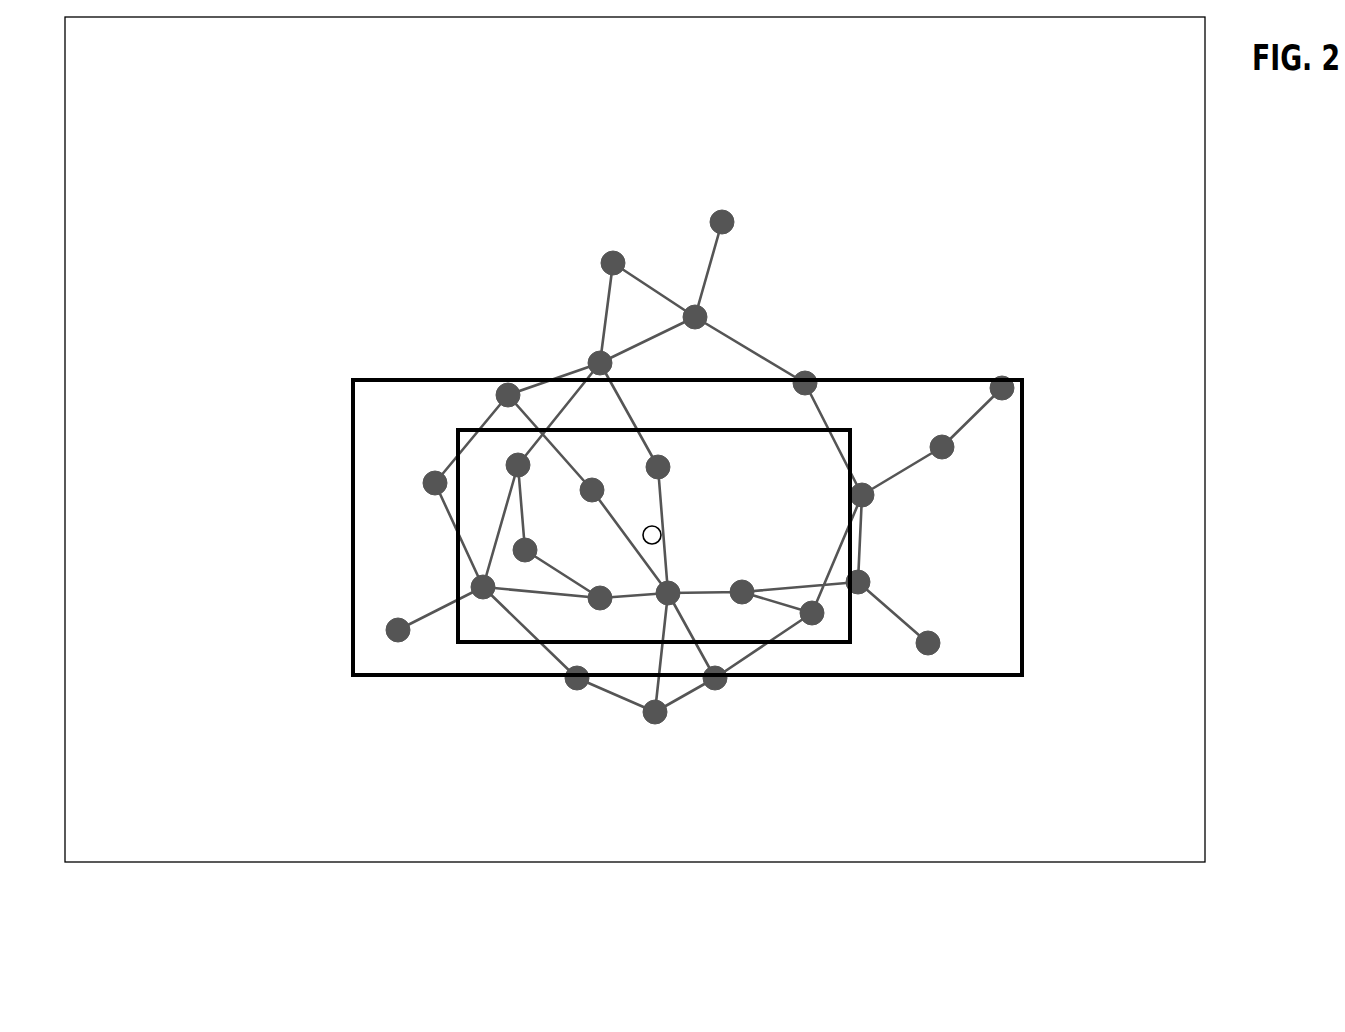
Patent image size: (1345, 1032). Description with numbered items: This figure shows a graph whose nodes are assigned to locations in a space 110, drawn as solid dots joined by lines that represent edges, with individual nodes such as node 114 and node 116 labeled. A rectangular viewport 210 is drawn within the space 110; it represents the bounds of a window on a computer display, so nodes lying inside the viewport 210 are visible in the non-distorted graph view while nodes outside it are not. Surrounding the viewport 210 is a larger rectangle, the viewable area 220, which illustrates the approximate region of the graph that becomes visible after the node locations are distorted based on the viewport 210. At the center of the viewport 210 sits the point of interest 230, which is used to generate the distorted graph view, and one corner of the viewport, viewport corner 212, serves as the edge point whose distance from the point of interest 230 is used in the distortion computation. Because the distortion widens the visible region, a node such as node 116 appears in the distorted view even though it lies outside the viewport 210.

The space 110 is at (635, 477).
The node 114 is at (747, 622).
The node 116 is at (882, 497).
The viewport 210 is at (485, 663).
The viewport corner 212 is at (436, 426).
The viewable area 220 is at (427, 358).
The point of interest 230 is at (670, 520).